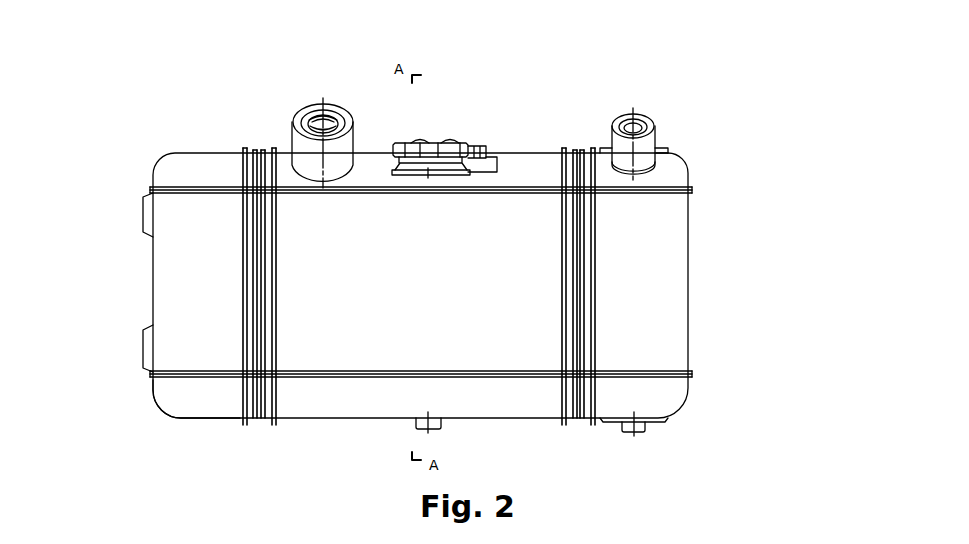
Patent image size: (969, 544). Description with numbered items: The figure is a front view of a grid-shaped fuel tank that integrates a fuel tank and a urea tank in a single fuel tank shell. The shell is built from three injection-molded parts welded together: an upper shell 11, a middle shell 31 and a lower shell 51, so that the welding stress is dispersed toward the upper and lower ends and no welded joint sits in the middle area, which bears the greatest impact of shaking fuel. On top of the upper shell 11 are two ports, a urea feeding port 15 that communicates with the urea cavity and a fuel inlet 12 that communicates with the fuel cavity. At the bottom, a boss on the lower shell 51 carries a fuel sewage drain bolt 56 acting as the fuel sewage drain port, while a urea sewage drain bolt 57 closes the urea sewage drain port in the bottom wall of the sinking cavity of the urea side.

The upper shell 11 is at (199, 177).
The fuel inlet 12 is at (640, 132).
The urea feeding port 15 is at (316, 121).
The middle shell 31 is at (195, 295).
The lower shell 51 is at (198, 397).
The fuel sewage drain bolt 56 is at (640, 428).
The urea sewage drain bolt 57 is at (424, 421).